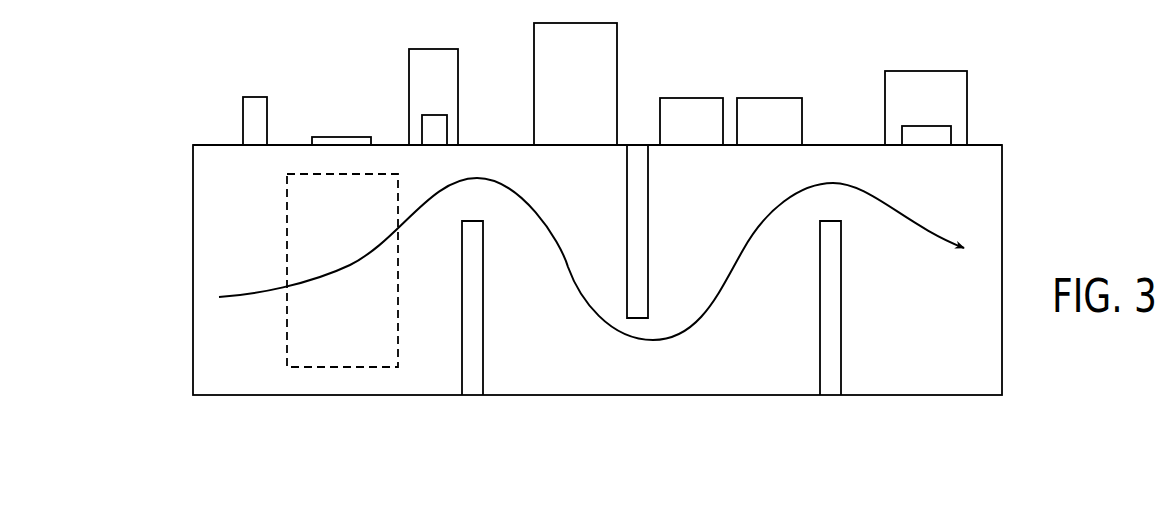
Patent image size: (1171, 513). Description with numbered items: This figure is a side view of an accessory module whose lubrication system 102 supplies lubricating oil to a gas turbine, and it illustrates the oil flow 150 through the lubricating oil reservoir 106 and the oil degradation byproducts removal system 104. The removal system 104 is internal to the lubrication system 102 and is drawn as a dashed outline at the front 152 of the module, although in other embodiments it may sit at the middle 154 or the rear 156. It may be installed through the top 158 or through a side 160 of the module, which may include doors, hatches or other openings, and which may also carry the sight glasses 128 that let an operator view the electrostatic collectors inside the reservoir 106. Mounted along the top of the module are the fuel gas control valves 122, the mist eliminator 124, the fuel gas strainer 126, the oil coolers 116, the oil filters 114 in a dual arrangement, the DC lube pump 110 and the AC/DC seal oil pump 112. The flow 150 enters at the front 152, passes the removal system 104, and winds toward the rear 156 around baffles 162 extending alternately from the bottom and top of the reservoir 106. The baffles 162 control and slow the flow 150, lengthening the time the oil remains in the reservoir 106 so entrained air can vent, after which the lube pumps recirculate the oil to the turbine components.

The lubrication system 102 is at (843, 142).
The oil degradation byproducts removal system 104 is at (287, 352).
The lubricating oil reservoir 106 is at (1002, 209).
The DC lube pump 110 is at (925, 71).
The AC/DC seal oil pump 112 is at (928, 126).
The oil filters 114 is at (760, 108).
The oil coolers 116 is at (608, 47).
The fuel gas control valves 122 is at (254, 100).
The mist eliminator 124 is at (437, 74).
The fuel gas strainer 126 is at (437, 131).
The sight glasses 128 is at (342, 137).
The oil flow 150 is at (693, 332).
The front 152 is at (350, 404).
The middle 154 is at (660, 404).
The rear 156 is at (955, 406).
The top 158 is at (292, 139).
The side 160 is at (227, 238).
The baffles 162 is at (640, 213).